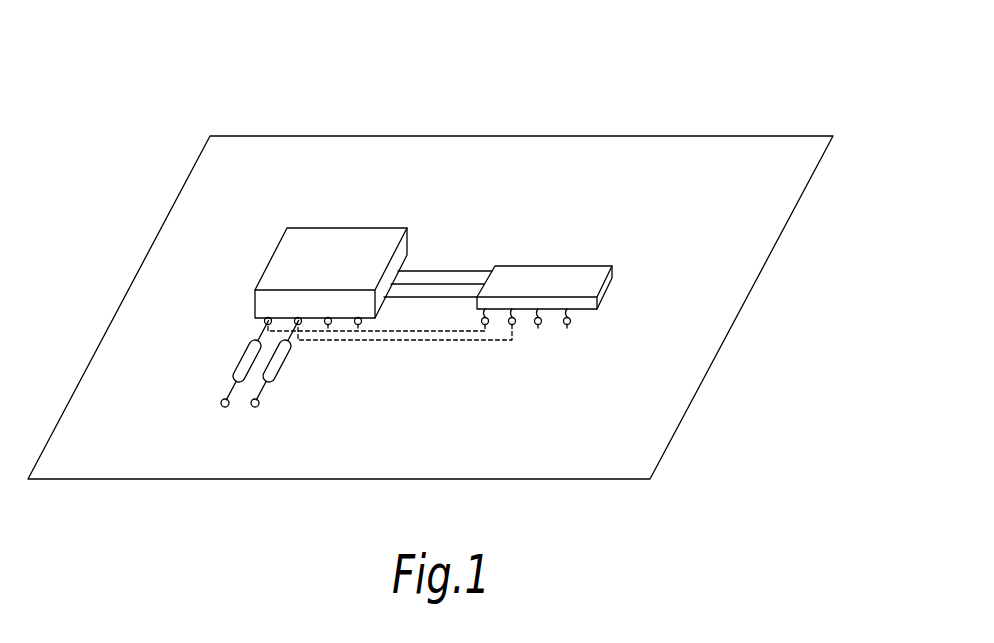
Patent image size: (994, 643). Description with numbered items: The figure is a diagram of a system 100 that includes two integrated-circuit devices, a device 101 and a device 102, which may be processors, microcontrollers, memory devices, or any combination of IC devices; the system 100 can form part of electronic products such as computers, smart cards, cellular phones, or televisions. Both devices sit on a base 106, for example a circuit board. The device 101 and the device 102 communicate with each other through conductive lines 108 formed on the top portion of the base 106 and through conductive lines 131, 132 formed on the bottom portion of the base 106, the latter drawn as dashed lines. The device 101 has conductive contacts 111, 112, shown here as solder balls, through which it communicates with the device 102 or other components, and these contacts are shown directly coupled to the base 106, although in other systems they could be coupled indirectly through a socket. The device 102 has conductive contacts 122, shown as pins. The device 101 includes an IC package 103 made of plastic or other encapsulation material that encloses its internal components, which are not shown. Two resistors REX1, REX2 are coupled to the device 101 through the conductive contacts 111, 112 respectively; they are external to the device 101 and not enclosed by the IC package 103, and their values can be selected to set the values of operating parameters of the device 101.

The system 100 is at (713, 57).
The device 101 is at (388, 197).
The device 102 is at (582, 240).
The IC package 103 is at (350, 227).
The base 106 is at (523, 135).
The conductive lines 108 is at (447, 271).
The conductive contact 111 is at (268, 317).
The conductive contact 112 is at (298, 317).
The conductive contacts 122 is at (541, 326).
The conductive line 131 is at (390, 345).
The conductive line 132 is at (437, 333).
The resistor REX1 is at (248, 354).
The resistor REX2 is at (278, 360).